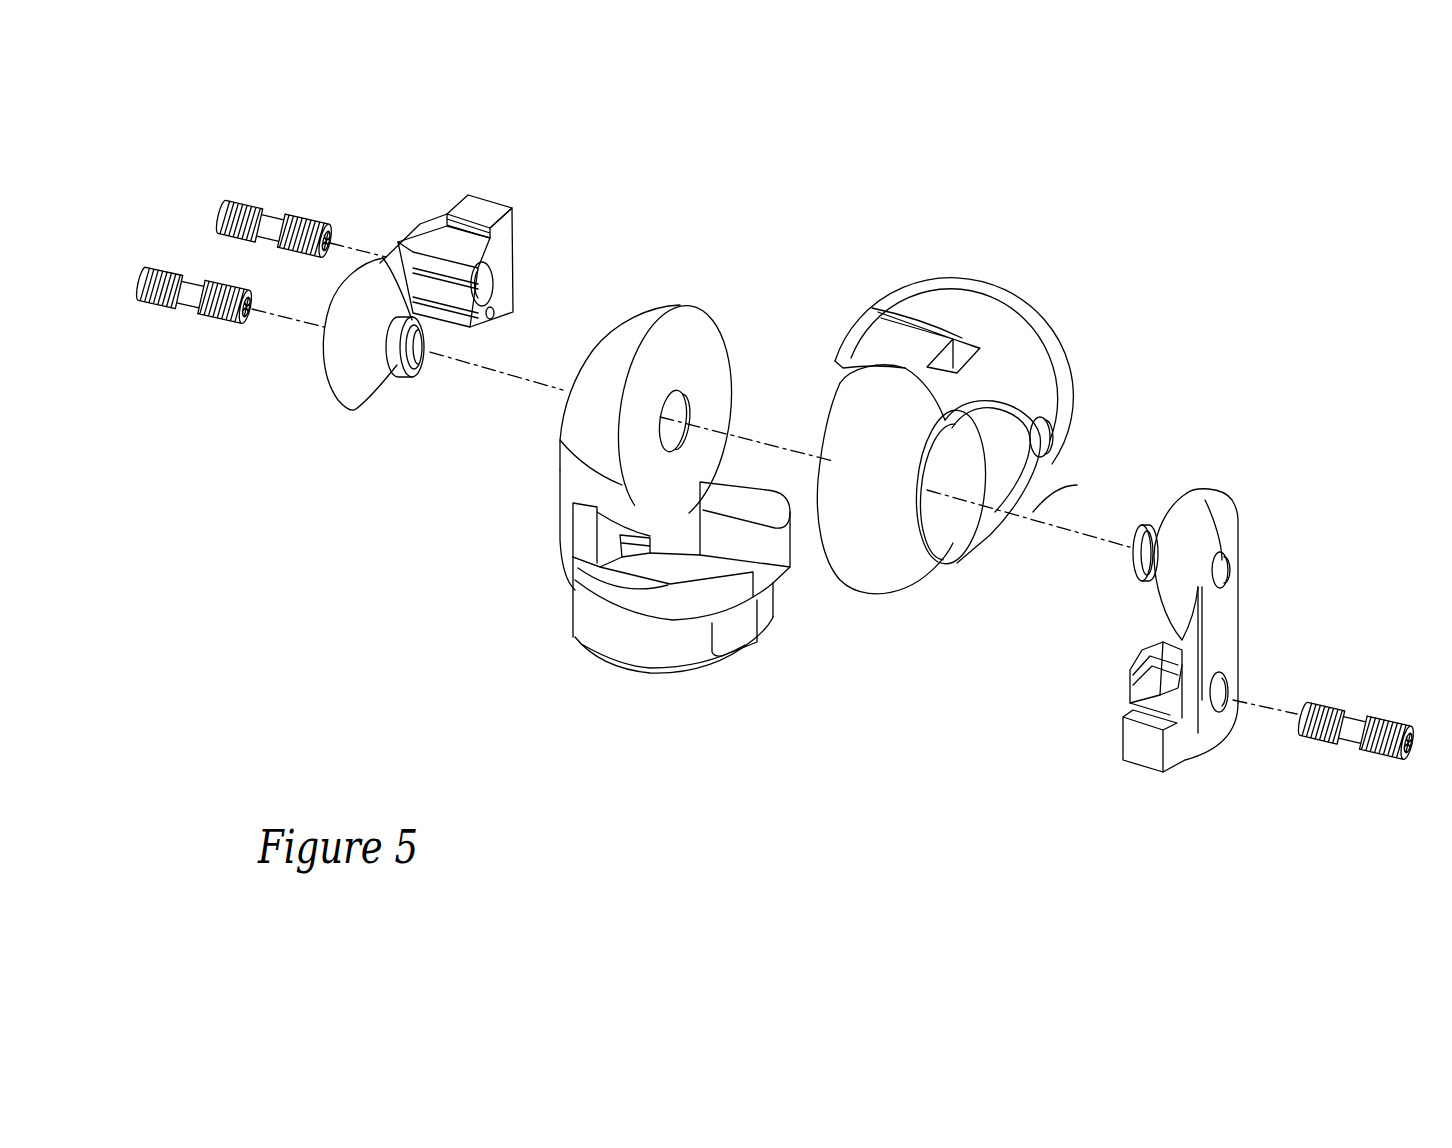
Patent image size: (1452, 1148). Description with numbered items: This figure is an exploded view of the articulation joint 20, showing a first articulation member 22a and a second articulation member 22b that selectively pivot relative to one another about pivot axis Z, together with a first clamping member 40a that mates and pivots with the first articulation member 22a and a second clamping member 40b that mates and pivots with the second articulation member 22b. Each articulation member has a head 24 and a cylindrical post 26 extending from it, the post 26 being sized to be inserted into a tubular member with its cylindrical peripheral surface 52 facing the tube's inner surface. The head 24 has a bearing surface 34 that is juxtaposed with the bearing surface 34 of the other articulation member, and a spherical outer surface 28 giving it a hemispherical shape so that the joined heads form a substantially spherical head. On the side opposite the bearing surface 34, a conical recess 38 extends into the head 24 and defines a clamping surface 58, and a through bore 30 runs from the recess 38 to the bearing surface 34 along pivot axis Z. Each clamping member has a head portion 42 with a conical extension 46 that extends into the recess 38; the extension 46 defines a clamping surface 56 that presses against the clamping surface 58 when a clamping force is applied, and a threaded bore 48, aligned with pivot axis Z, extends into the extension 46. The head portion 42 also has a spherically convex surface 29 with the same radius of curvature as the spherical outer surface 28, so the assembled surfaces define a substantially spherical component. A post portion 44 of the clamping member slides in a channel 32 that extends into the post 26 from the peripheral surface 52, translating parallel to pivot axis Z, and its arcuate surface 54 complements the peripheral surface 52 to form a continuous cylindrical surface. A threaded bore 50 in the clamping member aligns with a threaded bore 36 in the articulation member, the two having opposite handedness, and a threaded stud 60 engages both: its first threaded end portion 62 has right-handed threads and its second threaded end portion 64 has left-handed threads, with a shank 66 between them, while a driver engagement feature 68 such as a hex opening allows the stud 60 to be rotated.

The articulation joint 20 is at (915, 200).
The first articulation member 22a is at (510, 597).
The second articulation member 22b is at (1115, 393).
The head 24 is at (600, 352).
The post 26 is at (608, 655).
The spherical outer surface 28 is at (587, 423).
The spherically convex surface 29 is at (1220, 535).
The through bore 30 is at (688, 402).
The channel 32 is at (832, 385).
The bearing surface 34 is at (707, 328).
The threaded bore 36 is at (573, 505).
The recess 38 is at (933, 548).
The first clamping member 40a is at (1092, 673).
The second clamping member 40b is at (402, 218).
The head portion 42 is at (333, 312).
The post portion 44 is at (483, 208).
The extension 46 is at (362, 388).
The threaded bore 48 is at (412, 350).
The threaded bore 50 is at (483, 282).
The cylindrical peripheral surface 52 is at (672, 672).
The arcuate surface 54 is at (1205, 738).
The clamping surface 56 is at (342, 388).
The clamping surface 58 is at (947, 520).
The threaded stud 60 is at (207, 190).
The first threaded end portion 62 is at (250, 210).
The second threaded end portion 64 is at (323, 220).
The shank 66 is at (273, 216).
The driver engagement feature 68 is at (334, 241).